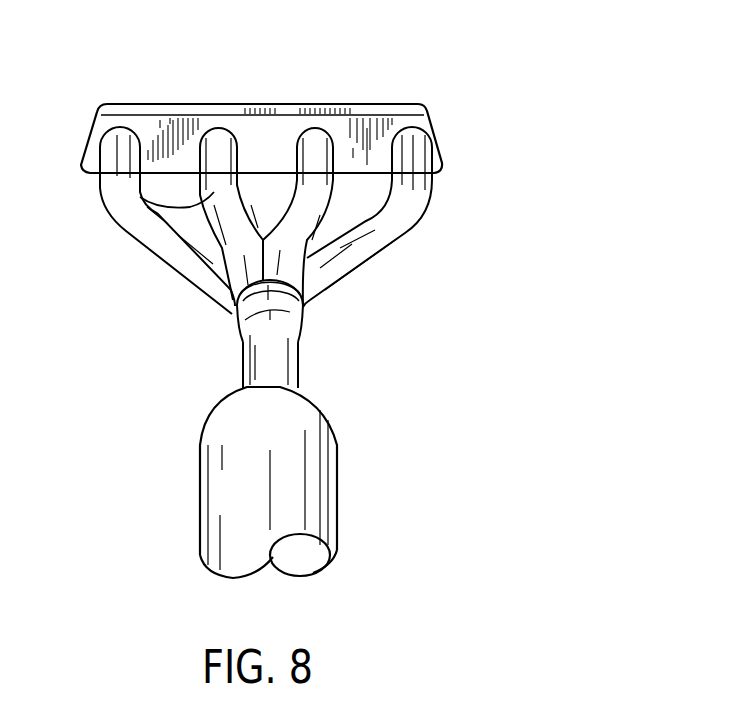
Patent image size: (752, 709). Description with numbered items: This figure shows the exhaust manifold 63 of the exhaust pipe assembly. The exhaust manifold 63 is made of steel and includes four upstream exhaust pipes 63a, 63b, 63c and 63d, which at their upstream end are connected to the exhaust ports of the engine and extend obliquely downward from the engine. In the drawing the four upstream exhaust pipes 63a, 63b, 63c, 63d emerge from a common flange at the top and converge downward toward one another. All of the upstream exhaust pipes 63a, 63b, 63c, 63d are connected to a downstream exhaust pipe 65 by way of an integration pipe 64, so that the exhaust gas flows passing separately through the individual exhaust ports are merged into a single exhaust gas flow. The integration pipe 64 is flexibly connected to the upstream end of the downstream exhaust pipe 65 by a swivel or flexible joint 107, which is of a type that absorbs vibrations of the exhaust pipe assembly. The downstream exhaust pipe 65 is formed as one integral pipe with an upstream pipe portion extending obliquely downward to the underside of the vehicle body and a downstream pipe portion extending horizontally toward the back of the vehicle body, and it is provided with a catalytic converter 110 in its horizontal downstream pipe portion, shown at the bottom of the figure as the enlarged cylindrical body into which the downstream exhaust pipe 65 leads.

The exhaust manifold 63 is at (142, 264).
The upstream exhaust pipe 63a is at (190, 257).
The upstream exhaust pipe 63b is at (102, 195).
The upstream exhaust pipe 63c is at (300, 200).
The upstream exhaust pipe 63d is at (372, 232).
The integration pipe 64 is at (292, 308).
The downstream exhaust pipe 65 is at (280, 357).
The swivel or flexible joint 107 is at (263, 307).
The catalytic converter 110 is at (315, 502).